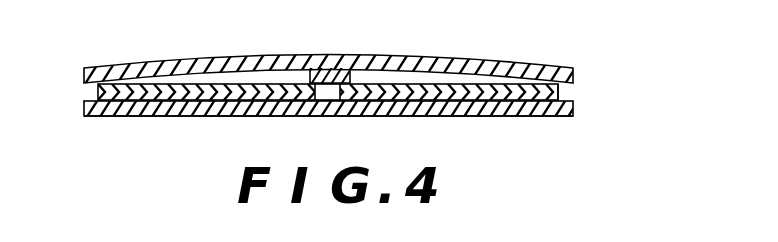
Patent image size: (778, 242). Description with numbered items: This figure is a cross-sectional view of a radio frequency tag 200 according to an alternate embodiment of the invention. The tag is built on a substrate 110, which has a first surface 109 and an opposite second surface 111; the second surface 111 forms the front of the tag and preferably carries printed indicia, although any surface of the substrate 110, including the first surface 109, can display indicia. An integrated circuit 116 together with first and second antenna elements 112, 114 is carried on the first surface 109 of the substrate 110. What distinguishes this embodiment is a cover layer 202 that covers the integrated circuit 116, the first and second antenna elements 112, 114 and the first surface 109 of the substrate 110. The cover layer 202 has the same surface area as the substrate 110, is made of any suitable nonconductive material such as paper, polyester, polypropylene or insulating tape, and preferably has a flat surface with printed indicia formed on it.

The radio frequency tag 200 is at (600, 68).
The cover layer 202 is at (421, 57).
The integrated circuit 116 is at (325, 69).
The second antenna element 114 is at (100, 91).
The first antenna element 112 is at (560, 91).
The first surface 109 is at (325, 92).
The second surface 111 is at (172, 118).
The substrate 110 is at (443, 118).